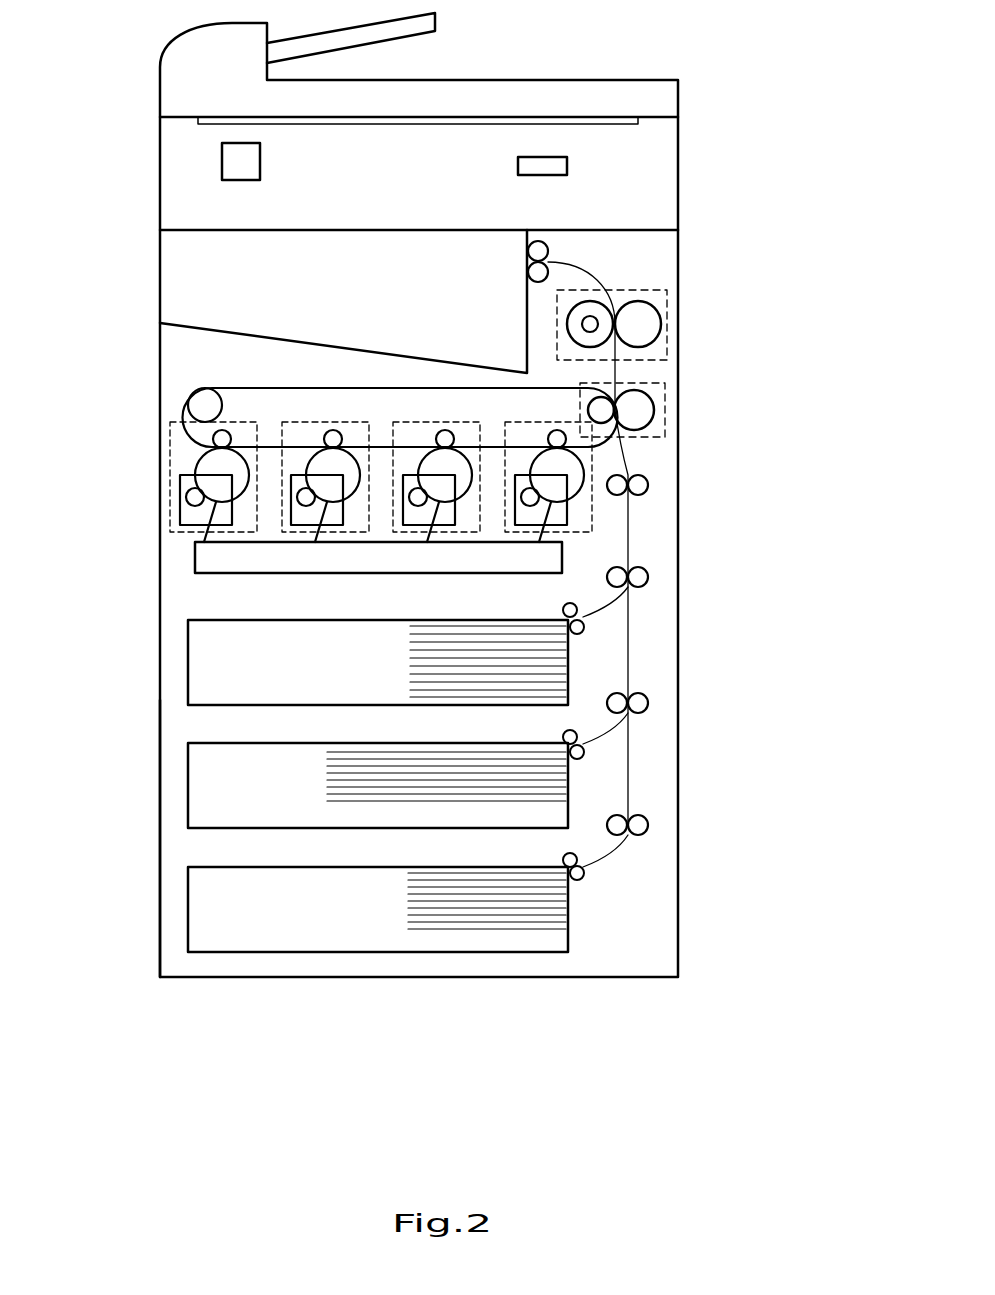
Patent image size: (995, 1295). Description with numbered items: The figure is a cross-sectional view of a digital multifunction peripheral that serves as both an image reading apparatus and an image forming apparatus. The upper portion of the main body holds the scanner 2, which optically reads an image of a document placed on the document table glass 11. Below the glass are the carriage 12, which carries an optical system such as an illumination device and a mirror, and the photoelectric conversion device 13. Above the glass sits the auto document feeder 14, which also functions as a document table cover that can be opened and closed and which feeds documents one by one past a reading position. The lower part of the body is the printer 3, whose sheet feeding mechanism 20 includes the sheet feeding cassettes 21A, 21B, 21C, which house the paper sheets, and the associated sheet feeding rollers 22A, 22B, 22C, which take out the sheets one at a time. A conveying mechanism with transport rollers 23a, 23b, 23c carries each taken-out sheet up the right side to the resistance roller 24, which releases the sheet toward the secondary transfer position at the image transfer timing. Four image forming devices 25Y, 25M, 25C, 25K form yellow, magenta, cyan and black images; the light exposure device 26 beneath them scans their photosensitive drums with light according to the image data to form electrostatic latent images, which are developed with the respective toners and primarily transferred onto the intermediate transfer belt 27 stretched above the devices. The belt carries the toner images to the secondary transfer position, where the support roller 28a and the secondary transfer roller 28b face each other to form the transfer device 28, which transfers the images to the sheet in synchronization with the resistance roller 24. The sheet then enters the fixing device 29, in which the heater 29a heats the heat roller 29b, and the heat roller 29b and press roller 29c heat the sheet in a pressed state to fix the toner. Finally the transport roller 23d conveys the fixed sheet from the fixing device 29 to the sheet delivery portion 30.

The scanner 2 is at (683, 141).
The printer 3 is at (683, 263).
The document table glass 11 is at (431, 126).
The carriage 12 is at (262, 163).
The photoelectric conversion device 13 is at (569, 165).
The auto document feeder 14 is at (622, 92).
The sheet feeding mechanism 20 is at (184, 758).
The sheet feeding cassette 21A is at (330, 619).
The sheet feeding cassette 21B is at (330, 742).
The sheet feeding cassette 21C is at (330, 866).
The sheet feeding roller 22A is at (563, 607).
The sheet feeding roller 22B is at (563, 733).
The sheet feeding roller 22C is at (563, 857).
The transport roller 23a is at (649, 577).
The transport roller 23b is at (649, 703).
The transport roller 23c is at (649, 825).
The transport roller 23d is at (549, 251).
The resistance roller 24 is at (649, 484).
The image forming device 25Y is at (238, 413).
The image forming device 25M is at (328, 413).
The image forming device 25C is at (408, 413).
The image forming device 25K is at (568, 422).
The light exposure device 26 is at (194, 554).
The intermediate transfer belt 27 is at (238, 388).
The transfer device 28 is at (644, 404).
The support roller 28a is at (589, 399).
The secondary transfer roller 28b is at (653, 418).
The fixing device 29 is at (608, 325).
The heater 29a is at (582, 322).
The heat roller 29b is at (569, 336).
The press roller 29c is at (656, 306).
The sheet delivery portion 30 is at (384, 348).